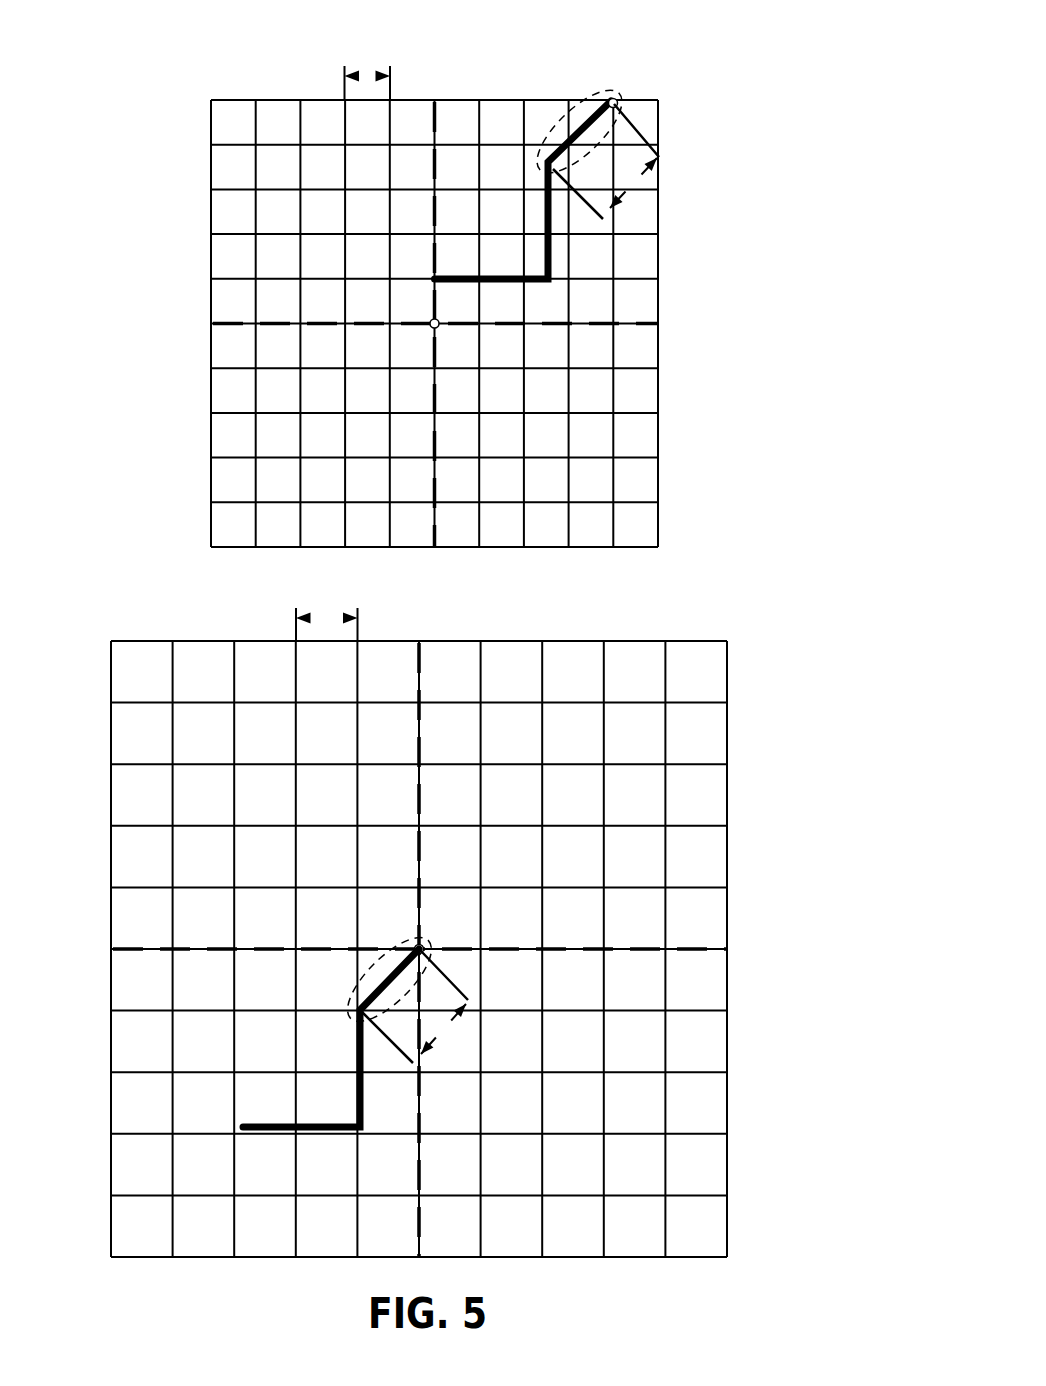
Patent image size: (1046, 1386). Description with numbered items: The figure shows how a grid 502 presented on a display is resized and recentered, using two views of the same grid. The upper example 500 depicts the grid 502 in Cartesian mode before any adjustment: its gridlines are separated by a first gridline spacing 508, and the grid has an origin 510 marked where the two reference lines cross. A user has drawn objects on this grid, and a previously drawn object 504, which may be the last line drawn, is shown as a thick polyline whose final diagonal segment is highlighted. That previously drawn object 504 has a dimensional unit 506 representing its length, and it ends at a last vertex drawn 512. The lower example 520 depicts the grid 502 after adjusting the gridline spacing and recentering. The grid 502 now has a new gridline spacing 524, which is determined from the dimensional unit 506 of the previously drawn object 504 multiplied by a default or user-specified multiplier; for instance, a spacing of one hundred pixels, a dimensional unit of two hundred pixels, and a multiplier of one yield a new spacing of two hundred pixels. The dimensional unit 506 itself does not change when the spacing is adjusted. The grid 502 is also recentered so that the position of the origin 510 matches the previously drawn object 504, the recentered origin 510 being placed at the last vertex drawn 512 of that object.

The example 500 is at (135, 55).
The grid 502 is at (436, 99).
The previously drawn object 504 is at (573, 146).
The dimensional unit 506 is at (636, 198).
The gridline spacing 508 is at (337, 79).
The origin 510 is at (433, 319).
The last vertex drawn 512 is at (614, 99).
The example 520 is at (135, 605).
The new gridline spacing 524 is at (287, 603).